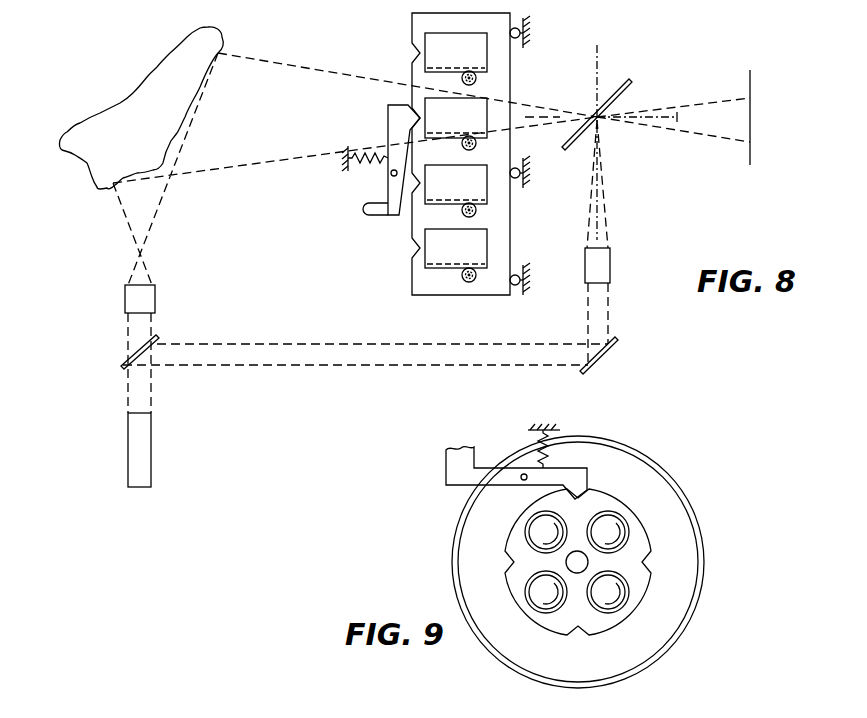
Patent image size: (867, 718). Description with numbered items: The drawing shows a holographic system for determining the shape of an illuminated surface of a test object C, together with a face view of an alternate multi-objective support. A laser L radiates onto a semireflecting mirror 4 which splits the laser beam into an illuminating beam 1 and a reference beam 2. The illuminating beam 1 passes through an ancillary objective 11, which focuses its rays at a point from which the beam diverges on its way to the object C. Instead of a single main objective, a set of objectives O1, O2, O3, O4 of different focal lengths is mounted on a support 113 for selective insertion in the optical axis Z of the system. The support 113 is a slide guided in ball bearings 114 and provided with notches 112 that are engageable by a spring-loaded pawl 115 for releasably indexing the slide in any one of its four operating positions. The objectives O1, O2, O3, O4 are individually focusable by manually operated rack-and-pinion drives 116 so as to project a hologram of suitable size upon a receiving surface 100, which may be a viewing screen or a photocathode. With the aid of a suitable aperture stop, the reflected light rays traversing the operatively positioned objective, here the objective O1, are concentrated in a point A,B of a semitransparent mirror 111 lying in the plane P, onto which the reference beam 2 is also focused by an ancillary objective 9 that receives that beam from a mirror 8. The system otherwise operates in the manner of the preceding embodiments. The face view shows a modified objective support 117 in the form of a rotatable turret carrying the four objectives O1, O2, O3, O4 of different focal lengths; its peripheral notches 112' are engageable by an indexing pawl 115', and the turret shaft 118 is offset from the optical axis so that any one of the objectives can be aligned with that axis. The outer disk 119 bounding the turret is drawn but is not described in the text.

In FIG. 8, the test object C is at (128, 103).
In FIG. 8, the ancillary objective 11 is at (126, 298).
In FIG. 8, the illuminating beam 1 is at (124, 333).
In FIG. 8, the semireflecting mirror 4 is at (127, 357).
In FIG. 8, the laser L is at (145, 448).
In FIG. 8, the reference beam 2 is at (265, 360).
In FIG. 8, the mirror 8 is at (605, 360).
In FIG. 8, the ancillary objective 9 is at (603, 267).
In FIG. 8, the semitransparent mirror 111 is at (622, 85).
In FIG. 8, the plane P is at (596, 70).
In FIG. 8, the receiving surface 100 is at (748, 82).
In FIG. 8, the optical axis Z is at (675, 117).
In FIG. 8, the focal point A,B is at (603, 125).
In FIG. 8, the notches 112 is at (432, 154).
In FIG. 8, the objective support 113 is at (420, 288).
In FIG. 8, the objective O1 is at (437, 103).
In FIG. 9, the objective O1 is at (616, 528).
In FIG. 8, the objective O2 is at (435, 43).
In FIG. 9, the objective O2 is at (617, 605).
In FIG. 8, the objective O3 is at (485, 183).
In FIG. 9, the objective O3 is at (540, 600).
In FIG. 8, the objective O4 is at (437, 250).
In FIG. 9, the objective O4 is at (530, 527).
In FIG. 8, the rack-and-pinion drives 116 is at (478, 79).
In FIG. 8, the ball bearings 114 is at (527, 32).
In FIG. 8, the spring-loaded pawl 115 is at (367, 160).
In FIG. 9, the rotary objective disk 119 is at (685, 513).
In FIG. 9, the objective support 117 is at (512, 578).
In FIG. 9, the peripheral notches 112' is at (572, 650).
In FIG. 9, the turret shaft 118 is at (582, 560).
In FIG. 9, the indexing pawl 115' is at (485, 461).